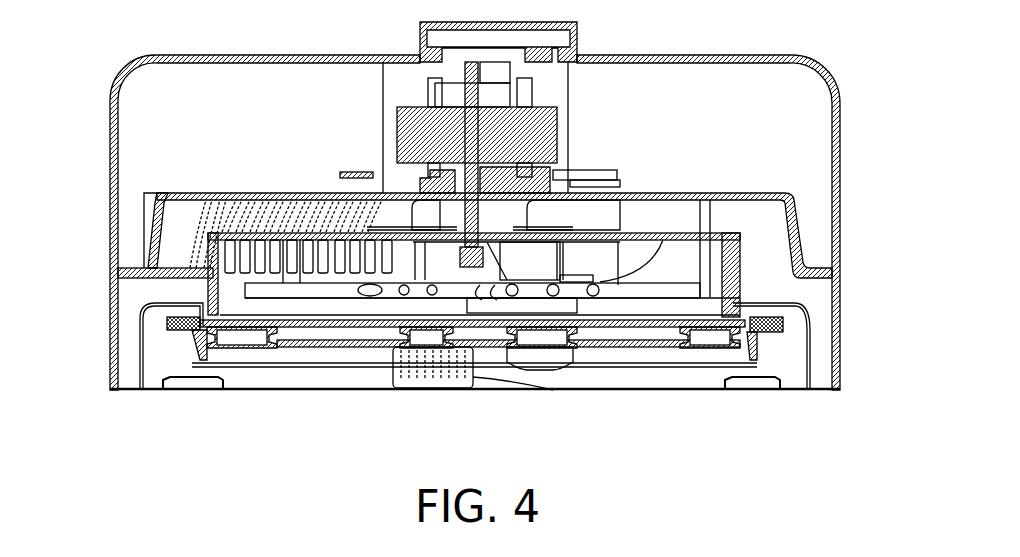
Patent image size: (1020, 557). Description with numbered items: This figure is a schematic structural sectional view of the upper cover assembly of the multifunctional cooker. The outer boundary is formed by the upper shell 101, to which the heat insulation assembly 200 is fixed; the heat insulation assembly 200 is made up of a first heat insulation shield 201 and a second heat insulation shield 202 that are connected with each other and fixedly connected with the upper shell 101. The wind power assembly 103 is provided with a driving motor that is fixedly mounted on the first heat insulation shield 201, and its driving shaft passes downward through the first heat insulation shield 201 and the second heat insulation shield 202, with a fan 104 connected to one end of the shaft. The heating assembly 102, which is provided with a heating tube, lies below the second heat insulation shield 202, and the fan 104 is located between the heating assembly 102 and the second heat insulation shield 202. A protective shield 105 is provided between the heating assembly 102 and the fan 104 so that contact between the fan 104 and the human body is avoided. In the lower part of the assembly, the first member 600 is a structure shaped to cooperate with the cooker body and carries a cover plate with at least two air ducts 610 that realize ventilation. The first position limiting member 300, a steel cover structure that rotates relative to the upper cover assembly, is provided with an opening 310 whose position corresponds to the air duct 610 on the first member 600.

The upper shell 101 is at (113, 93).
The heating assembly 102 is at (790, 200).
The wind power assembly 103 is at (553, 118).
The fan 104 is at (600, 212).
The protective shield 105 is at (695, 280).
The heat insulation assembly 200 is at (115, 233).
The first heat insulation shield 201 is at (148, 227).
The second heat insulation shield 202 is at (167, 272).
The first position limiting member 300 is at (773, 302).
The opening 310 is at (713, 332).
The first member 600 is at (340, 345).
The air duct 610 is at (247, 342).